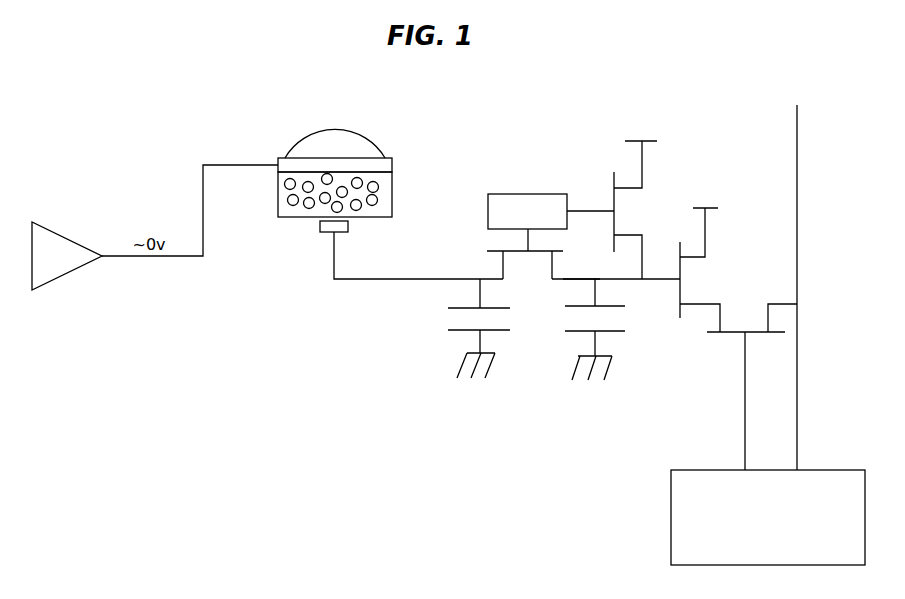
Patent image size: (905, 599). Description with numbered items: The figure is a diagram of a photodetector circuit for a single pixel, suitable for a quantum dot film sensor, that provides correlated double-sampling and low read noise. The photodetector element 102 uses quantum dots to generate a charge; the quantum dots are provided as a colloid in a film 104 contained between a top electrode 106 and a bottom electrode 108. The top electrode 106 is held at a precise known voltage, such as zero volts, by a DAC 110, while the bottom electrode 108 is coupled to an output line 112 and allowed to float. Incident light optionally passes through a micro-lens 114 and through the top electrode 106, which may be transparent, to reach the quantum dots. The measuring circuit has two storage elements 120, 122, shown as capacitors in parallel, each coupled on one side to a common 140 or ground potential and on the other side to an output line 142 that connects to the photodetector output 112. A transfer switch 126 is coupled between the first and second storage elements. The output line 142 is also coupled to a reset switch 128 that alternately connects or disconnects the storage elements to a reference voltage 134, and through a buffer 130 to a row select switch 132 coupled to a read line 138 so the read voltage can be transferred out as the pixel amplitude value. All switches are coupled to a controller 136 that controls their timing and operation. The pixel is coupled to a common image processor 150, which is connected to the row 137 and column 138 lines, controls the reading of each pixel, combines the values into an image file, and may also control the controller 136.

The photodetector element 102 is at (412, 85).
The film 104 is at (392, 193).
The top electrode 106 is at (384, 164).
The bottom electrode 108 is at (320, 226).
The DAC 110 is at (72, 237).
The output line 112 is at (360, 280).
The micro-lens 114 is at (313, 133).
The storage element 120 is at (455, 331).
The storage element 122 is at (573, 332).
The transfer switch 126 is at (495, 250).
The reset switch 128 is at (633, 235).
The buffer 130 is at (697, 258).
The row select switch 132 is at (720, 321).
The reference voltage 134 is at (630, 142).
The controller 136 is at (541, 194).
The row line 137 is at (745, 403).
The read line 138 is at (797, 420).
The common 140 is at (494, 373).
The output line 142 is at (567, 279).
The image processor 150 is at (768, 517).